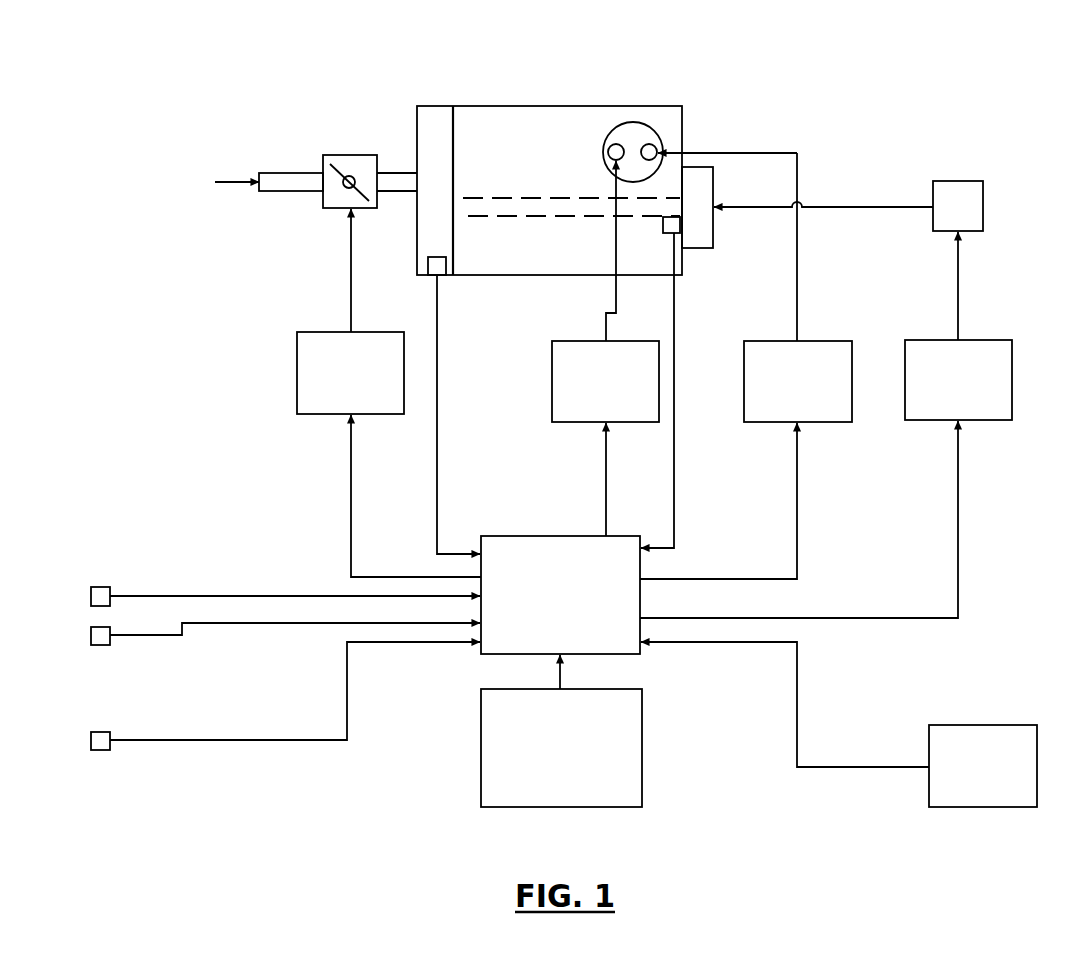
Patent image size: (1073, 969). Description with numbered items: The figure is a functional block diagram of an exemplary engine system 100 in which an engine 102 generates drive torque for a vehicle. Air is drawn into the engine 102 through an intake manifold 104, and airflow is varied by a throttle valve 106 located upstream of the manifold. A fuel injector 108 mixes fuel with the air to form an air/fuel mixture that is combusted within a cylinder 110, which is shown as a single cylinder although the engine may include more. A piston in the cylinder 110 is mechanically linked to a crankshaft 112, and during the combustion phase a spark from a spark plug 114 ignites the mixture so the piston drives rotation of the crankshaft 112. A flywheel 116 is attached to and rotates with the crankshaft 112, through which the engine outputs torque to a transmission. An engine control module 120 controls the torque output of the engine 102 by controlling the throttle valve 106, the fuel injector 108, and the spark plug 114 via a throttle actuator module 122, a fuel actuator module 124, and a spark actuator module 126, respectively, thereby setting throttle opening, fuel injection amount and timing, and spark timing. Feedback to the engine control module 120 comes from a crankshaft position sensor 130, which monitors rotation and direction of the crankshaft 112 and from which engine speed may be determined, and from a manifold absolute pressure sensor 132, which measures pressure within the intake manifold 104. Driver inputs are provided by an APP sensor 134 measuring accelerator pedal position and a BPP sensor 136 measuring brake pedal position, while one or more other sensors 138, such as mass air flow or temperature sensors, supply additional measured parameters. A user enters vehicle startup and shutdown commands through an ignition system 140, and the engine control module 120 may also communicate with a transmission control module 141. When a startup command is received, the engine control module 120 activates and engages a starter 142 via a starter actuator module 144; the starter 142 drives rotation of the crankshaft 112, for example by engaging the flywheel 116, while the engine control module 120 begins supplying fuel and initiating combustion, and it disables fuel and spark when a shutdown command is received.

The engine system 100 is at (158, 75).
The engine 102 is at (511, 106).
The intake manifold 104 is at (441, 106).
The throttle valve 106 is at (352, 155).
The fuel injector 108 is at (615, 122).
The cylinder 110 is at (608, 152).
The crankshaft 112 is at (565, 244).
The spark plug 114 is at (652, 144).
The flywheel 116 is at (713, 232).
The engine control module 120 is at (520, 536).
The throttle actuator module 122 is at (318, 332).
The fuel actuator module 124 is at (565, 341).
The spark actuator module 126 is at (760, 341).
The crankshaft position sensor 130 is at (666, 234).
The manifold absolute pressure sensor 132 is at (445, 276).
The APP sensor 134 is at (91, 597).
The BPP sensor 136 is at (91, 636).
The other sensors 138 is at (980, 725).
The ignition system 140 is at (91, 741).
The transmission control module 141 is at (642, 790).
The starter 142 is at (972, 231).
The starter actuator module 144 is at (1012, 408).